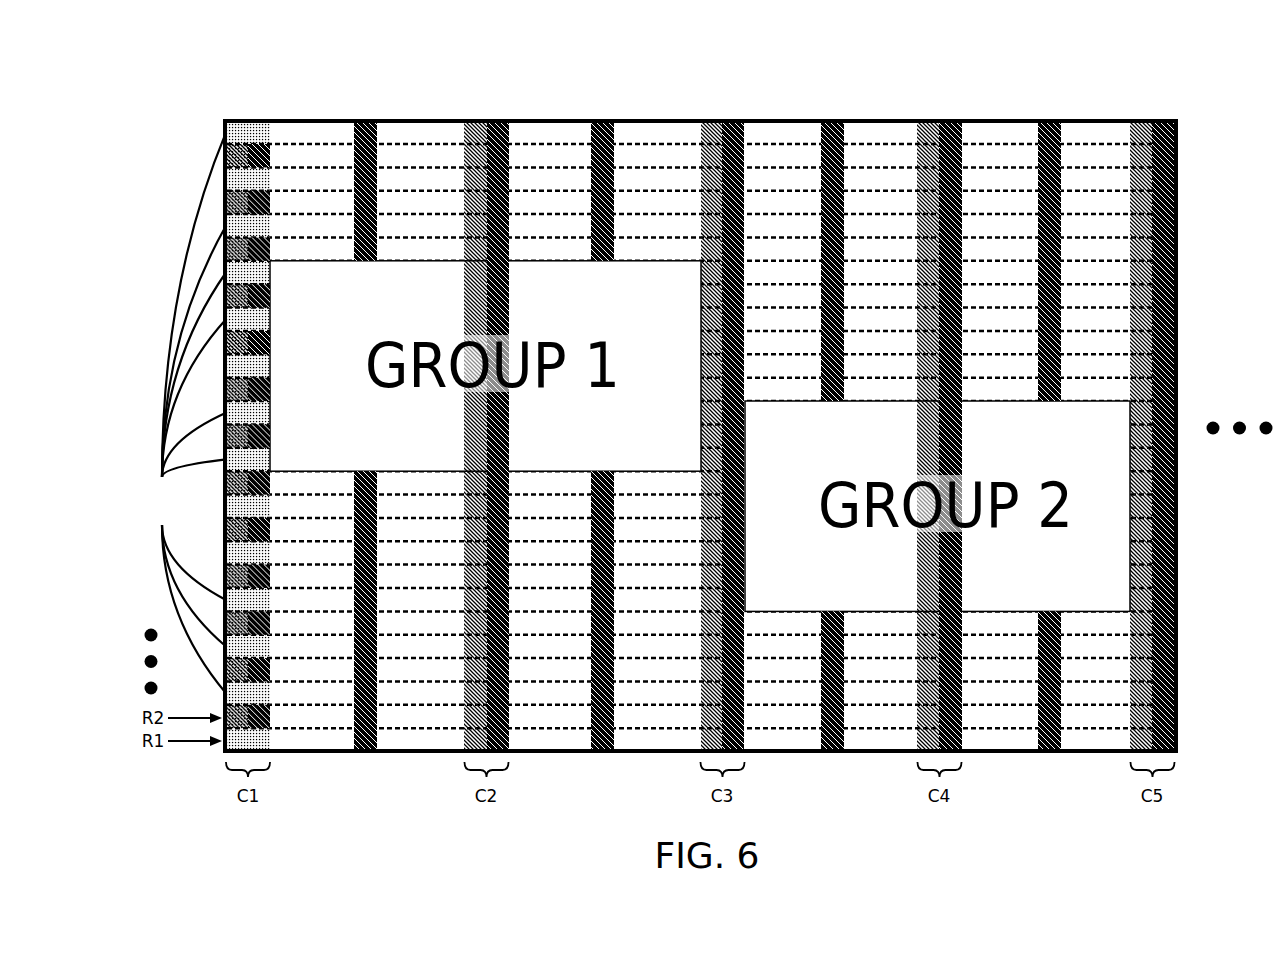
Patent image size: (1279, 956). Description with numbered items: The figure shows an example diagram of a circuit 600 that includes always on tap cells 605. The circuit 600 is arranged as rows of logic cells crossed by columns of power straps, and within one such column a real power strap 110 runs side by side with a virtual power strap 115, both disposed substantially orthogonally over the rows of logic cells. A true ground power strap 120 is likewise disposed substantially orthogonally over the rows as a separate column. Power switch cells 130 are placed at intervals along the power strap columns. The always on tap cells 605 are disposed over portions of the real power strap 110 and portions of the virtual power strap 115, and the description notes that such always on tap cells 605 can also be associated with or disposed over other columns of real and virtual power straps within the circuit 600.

The real power strap 110 is at (237, 110).
The virtual power strap 115 is at (262, 110).
The true ground power strap 120 is at (365, 110).
The power switch cell 130 is at (700, 436).
The circuit 600 is at (1228, 154).
The always on tap cell 605 is at (226, 505).